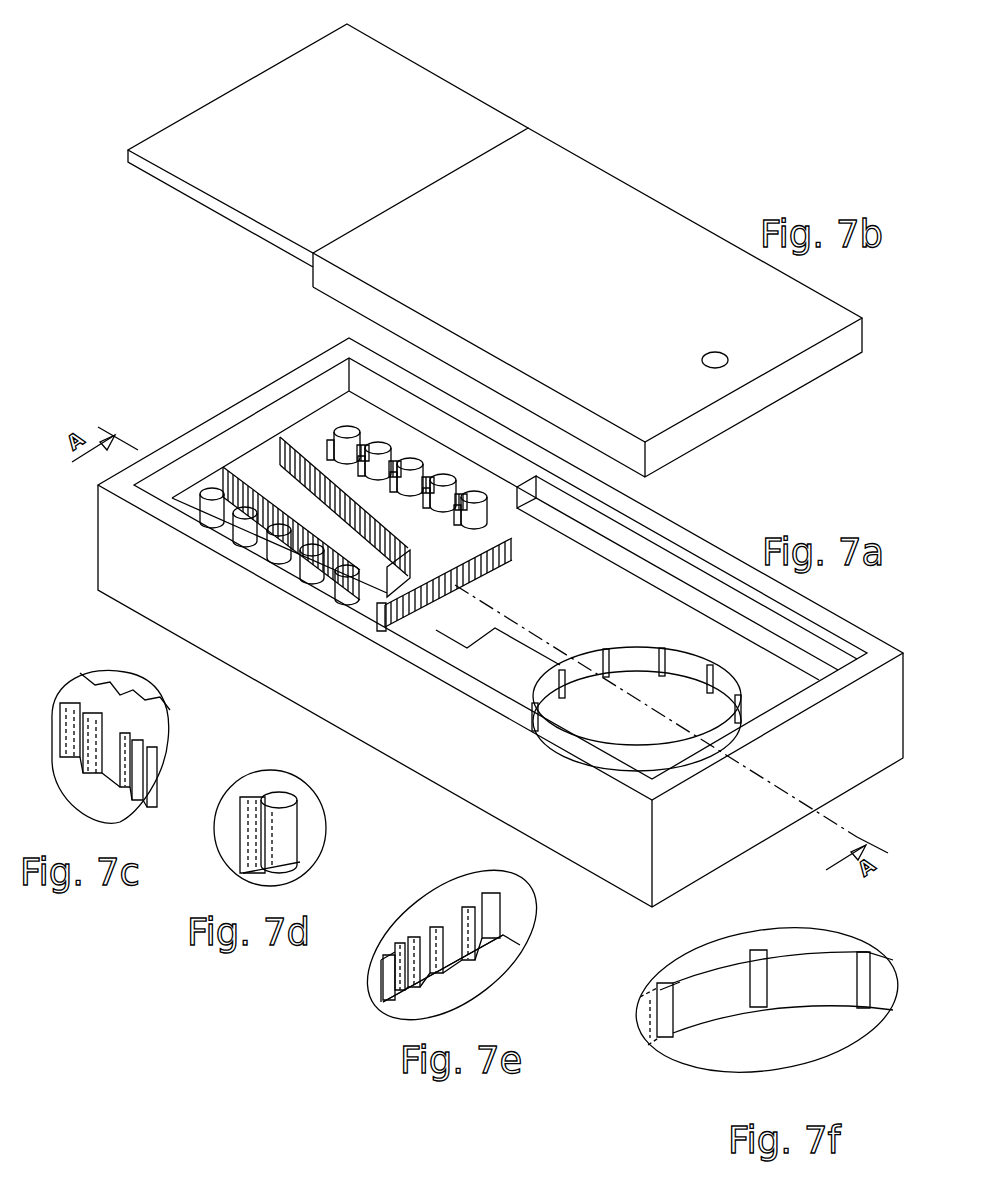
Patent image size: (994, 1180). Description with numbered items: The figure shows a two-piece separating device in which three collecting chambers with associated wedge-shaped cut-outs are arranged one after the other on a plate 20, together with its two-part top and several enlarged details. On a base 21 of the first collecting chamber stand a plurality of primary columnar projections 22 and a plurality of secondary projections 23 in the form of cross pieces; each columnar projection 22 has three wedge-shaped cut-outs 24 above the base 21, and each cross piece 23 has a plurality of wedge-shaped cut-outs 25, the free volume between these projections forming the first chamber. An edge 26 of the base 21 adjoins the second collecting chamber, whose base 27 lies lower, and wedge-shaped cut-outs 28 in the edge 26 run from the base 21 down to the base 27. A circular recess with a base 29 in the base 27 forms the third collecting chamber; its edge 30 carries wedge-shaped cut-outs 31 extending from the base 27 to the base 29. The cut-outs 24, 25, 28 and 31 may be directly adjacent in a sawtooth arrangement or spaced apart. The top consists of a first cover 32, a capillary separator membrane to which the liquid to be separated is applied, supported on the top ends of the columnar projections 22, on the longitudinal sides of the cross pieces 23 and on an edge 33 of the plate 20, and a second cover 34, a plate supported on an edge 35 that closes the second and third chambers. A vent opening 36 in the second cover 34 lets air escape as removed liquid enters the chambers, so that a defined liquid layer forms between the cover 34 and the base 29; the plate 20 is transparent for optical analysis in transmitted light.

In FIG. 7A, the plate 20 is at (877, 745).
In FIG. 7A, the base of the first collecting chamber 21 is at (375, 602).
In FIG. 7C, the base of the first collecting chamber 21 is at (228, 838).
In FIG. 7D, the base of the first collecting chamber 21 is at (271, 867).
In FIG. 7E, the base of the first collecting chamber 21 is at (463, 889).
In FIG. 7A, the primary columnar projections 22 is at (347, 425).
In FIG. 7D, the primary columnar projections 22 is at (266, 800).
In FIG. 7A, the secondary projections in the form of cross pieces 23 is at (310, 443).
In FIG. 7C, the secondary projections in the form of cross pieces 23 is at (110, 710).
In FIG. 7D, the wedge-shaped cut-outs 24 is at (250, 853).
In FIG. 7C, the wedge-shaped cut-outs 25 is at (125, 762).
In FIG. 7A, the edge of the base 26 is at (385, 614).
In FIG. 7E, the edge of the base 26 is at (396, 953).
In FIG. 7A, the base of the second collecting chamber 27 is at (548, 603).
In FIG. 7E, the base of the second collecting chamber 27 is at (498, 962).
In FIG. 7F, the base of the second collecting chamber 27 is at (680, 955).
In FIG. 7E, the wedge-shaped cut-outs 28 is at (425, 955).
In FIG. 7A, the base of the third collecting chamber 29 is at (626, 740).
In FIG. 7F, the base of the third collecting chamber 29 is at (825, 1048).
In FIG. 7F, the edge of the recess 30 is at (708, 997).
In FIG. 7F, the wedge-shaped cut-outs 31 is at (668, 1010).
In FIG. 7B, the first cover 32 is at (364, 140).
In FIG. 7A, the edge of the plate 33 is at (205, 468).
In FIG. 7B, the second cover 34 is at (565, 247).
In FIG. 7A, the edge 35 is at (652, 575).
In FIG. 7B, the vent opening 36 is at (718, 361).